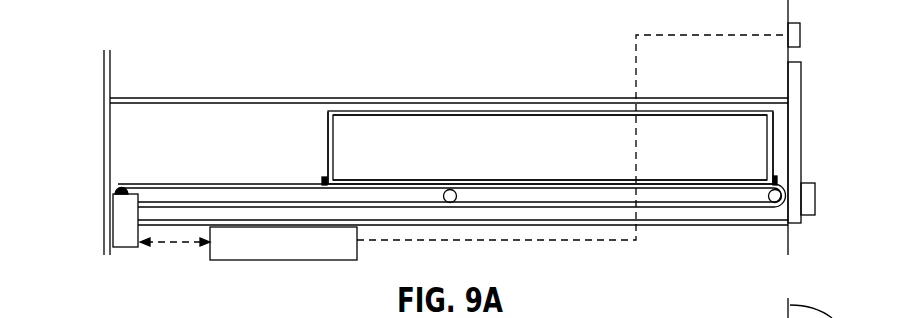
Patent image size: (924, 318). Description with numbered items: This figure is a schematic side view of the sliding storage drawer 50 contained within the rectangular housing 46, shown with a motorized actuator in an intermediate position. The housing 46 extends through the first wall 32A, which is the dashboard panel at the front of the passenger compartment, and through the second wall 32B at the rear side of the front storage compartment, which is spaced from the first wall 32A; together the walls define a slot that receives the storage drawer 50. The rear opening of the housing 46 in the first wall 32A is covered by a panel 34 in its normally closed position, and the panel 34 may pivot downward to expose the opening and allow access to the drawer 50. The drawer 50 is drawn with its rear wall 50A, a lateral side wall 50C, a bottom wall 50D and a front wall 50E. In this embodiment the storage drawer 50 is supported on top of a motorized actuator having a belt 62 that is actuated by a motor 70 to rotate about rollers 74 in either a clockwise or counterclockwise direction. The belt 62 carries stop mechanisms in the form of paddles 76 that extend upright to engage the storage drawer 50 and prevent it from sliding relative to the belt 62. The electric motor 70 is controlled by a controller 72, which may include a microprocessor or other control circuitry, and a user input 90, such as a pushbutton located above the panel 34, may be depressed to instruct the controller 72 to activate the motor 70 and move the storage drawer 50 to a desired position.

The first wall 32A is at (788, 4).
The second wall 32B is at (104, 88).
The panel 34 is at (802, 90).
The rectangular housing 46 is at (163, 143).
The sliding storage drawer 50 is at (395, 95).
The rear wall 50A is at (773, 143).
The lateral side wall 50C is at (598, 137).
The bottom wall 50D is at (448, 183).
The front wall 50E is at (327, 133).
The belt 62 is at (670, 208).
The motor 70 is at (118, 232).
The controller 72 is at (210, 255).
The rollers 74 is at (118, 191).
The paddles 76 is at (323, 178).
The user input 90 is at (800, 40).